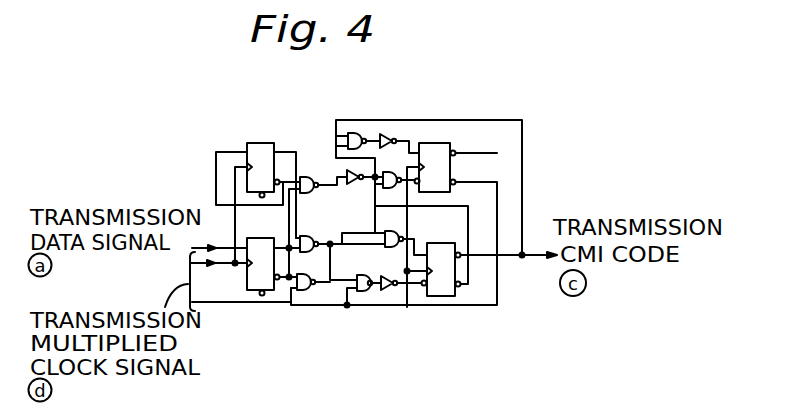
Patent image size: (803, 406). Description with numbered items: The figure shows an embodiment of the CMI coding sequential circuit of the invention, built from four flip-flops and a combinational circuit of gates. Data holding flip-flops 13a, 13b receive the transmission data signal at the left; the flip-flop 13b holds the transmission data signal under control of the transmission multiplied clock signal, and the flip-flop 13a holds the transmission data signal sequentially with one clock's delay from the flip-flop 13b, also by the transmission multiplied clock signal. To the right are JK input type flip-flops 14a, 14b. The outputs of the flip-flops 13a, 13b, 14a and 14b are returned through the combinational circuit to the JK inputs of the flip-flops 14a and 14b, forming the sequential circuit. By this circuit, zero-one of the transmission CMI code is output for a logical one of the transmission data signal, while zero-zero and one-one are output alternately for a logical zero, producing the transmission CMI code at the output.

The data holding flip-flop 13a is at (265, 142).
The data holding flip-flop 13b is at (266, 238).
The JK input type flip-flop 14a is at (443, 143).
The JK input type flip-flop 14b is at (437, 243).